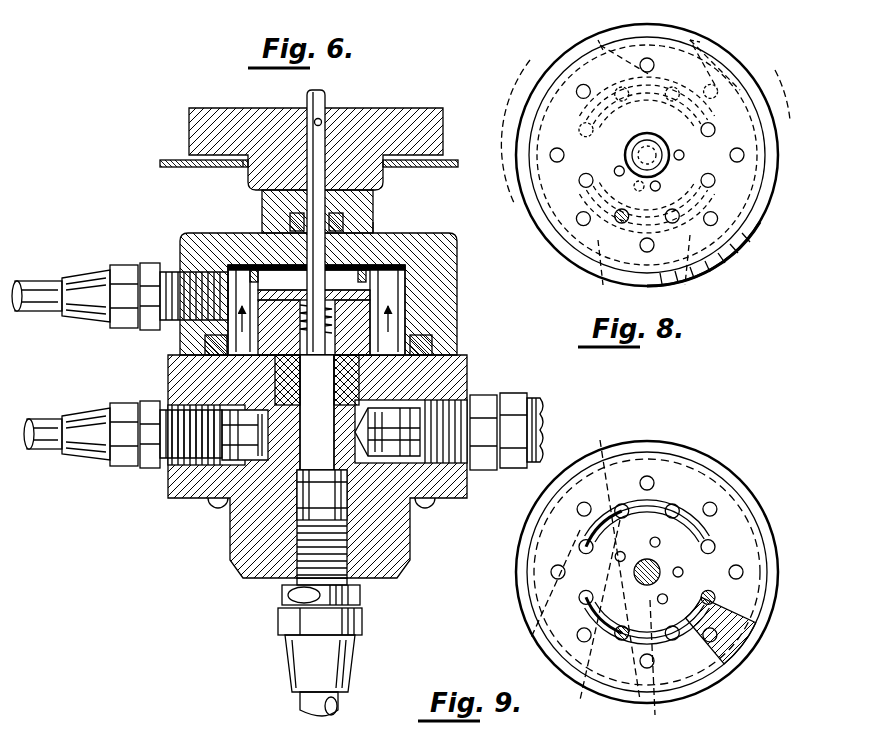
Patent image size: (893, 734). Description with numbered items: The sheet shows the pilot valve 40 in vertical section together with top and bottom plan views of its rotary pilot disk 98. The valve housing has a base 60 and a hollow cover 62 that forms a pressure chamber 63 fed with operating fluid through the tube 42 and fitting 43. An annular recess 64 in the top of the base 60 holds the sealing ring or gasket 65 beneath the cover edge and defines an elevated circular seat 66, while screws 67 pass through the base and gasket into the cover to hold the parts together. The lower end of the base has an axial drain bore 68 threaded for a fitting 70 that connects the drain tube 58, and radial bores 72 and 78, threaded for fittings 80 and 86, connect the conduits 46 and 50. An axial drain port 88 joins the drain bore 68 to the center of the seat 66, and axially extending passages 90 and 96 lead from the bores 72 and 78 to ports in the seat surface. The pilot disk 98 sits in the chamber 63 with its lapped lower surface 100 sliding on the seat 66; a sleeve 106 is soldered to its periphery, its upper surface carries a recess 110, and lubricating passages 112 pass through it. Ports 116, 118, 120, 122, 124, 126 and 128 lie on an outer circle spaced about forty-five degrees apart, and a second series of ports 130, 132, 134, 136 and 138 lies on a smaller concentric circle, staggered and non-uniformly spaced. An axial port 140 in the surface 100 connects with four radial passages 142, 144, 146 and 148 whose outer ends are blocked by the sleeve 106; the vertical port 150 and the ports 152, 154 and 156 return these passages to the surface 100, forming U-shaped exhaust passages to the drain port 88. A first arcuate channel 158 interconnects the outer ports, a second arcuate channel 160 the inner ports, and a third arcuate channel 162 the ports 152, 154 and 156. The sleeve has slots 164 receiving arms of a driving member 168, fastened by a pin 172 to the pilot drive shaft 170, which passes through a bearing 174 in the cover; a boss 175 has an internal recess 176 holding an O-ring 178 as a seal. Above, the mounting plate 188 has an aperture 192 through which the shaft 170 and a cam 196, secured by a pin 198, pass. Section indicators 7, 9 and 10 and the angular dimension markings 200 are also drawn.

In FIG. 6, the pilot valve 40 is at (440, 230).
In FIG. 6, the tube 42 is at (50, 285).
In FIG. 6, the fitting 43 is at (150, 263).
In FIG. 6, the conduit 46 is at (45, 450).
In FIG. 6, the conduit 50 is at (535, 398).
In FIG. 6, the drain tube 58 is at (344, 696).
In FIG. 6, the base 60 is at (235, 540).
In FIG. 6, the cover 62 is at (447, 282).
In FIG. 6, the pressure chamber 63 is at (303, 301).
In FIG. 6, the annular recess 64 is at (367, 347).
In FIG. 6, the sealing ring or gasket 65 is at (448, 356).
In FIG. 6, the valve seat 66 is at (287, 380).
In FIG. 6, the screws 67 is at (216, 506).
In FIG. 6, the axial drain bore 68 is at (300, 490).
In FIG. 6, the fitting 70 is at (356, 602).
In FIG. 6, the radial bore 72 is at (245, 435).
In FIG. 6, the radial bore 78 is at (387, 432).
In FIG. 6, the fitting 80 is at (150, 468).
In FIG. 6, the fitting 86 is at (478, 472).
In FIG. 9, the fitting 86 is at (498, 470).
In FIG. 6, the axial drain port 88 is at (310, 396).
In FIG. 6, the axially extending passage 90 is at (268, 380).
In FIG. 6, the axially extending passage 96 is at (343, 382).
In FIG. 6, the rotary pilot disk 98 is at (325, 319).
In FIG. 8, the rotary pilot disk 98 is at (742, 232).
In FIG. 9, the rotary pilot disk 98 is at (678, 453).
In FIG. 9, the lower surface 100 is at (707, 462).
In FIG. 6, the sleeve 106 is at (364, 304).
In FIG. 8, the sleeve 106 is at (748, 200).
In FIG. 9, the sleeve 106 is at (762, 668).
In FIG. 8, the recess 110 is at (642, 194).
In FIG. 8, the lubricating passages 112 is at (691, 167).
In FIG. 9, the lubricating passages 112 is at (682, 558).
In FIG. 8, the port 116 is at (642, 62).
In FIG. 9, the port 116 is at (649, 668).
In FIG. 8, the port 118 is at (578, 86).
In FIG. 9, the port 118 is at (580, 636).
In FIG. 8, the port 120 is at (550, 157).
In FIG. 9, the port 120 is at (552, 570).
In FIG. 8, the port 122 is at (576, 222).
In FIG. 9, the port 122 is at (580, 506).
In FIG. 8, the port 124 is at (648, 252).
In FIG. 9, the port 124 is at (649, 476).
In FIG. 8, the port 126 is at (716, 226).
In FIG. 9, the port 126 is at (712, 504).
In FIG. 8, the port 128 is at (742, 160).
In FIG. 9, the port 128 is at (692, 570).
In FIG. 8, the port 130 is at (601, 173).
In FIG. 9, the port 130 is at (578, 546).
In FIG. 8, the port 132 is at (613, 202).
In FIG. 9, the port 132 is at (620, 518).
In FIG. 8, the port 134 is at (658, 188).
In FIG. 9, the port 134 is at (671, 518).
In FIG. 8, the port 136 is at (752, 180).
In FIG. 9, the port 136 is at (714, 544).
In FIG. 8, the port 138 is at (715, 152).
In FIG. 9, the port 138 is at (730, 578).
In FIG. 8, the axial port 140 is at (647, 155).
In FIG. 9, the axial port 140 is at (634, 570).
In FIG. 8, the radial passage 142 is at (736, 106).
In FIG. 9, the radial passage 142 is at (768, 645).
In FIG. 8, the radial passage 144 is at (692, 40).
In FIG. 9, the radial passage 144 is at (665, 657).
In FIG. 8, the radial passage 146 is at (600, 42).
In FIG. 9, the radial passage 146 is at (582, 672).
In FIG. 8, the radial passage 148 is at (532, 152).
In FIG. 9, the radial passage 148 is at (556, 622).
In FIG. 8, the vertical port 150 is at (706, 86).
In FIG. 9, the vertical port 150 is at (764, 655).
In FIG. 8, the port 152 is at (670, 87).
In FIG. 9, the port 152 is at (706, 628).
In FIG. 8, the port 154 is at (706, 128).
In FIG. 9, the port 154 is at (602, 680).
In FIG. 8, the port 156 is at (586, 139).
In FIG. 9, the port 156 is at (592, 591).
In FIG. 9, the first arcuate channel 158 is at (620, 500).
In FIG. 9, the second arcuate channel 160 is at (602, 490).
In FIG. 9, the third arcuate channel 162 is at (607, 645).
In FIG. 8, the axially extending slots 164 is at (685, 280).
In FIG. 6, the driving member 168 is at (300, 288).
In FIG. 8, the driving member 168 is at (600, 260).
In FIG. 6, the pilot drive shaft 170 is at (326, 106).
In FIG. 6, the pin 172 is at (349, 275).
In FIG. 6, the bearing 174 is at (323, 240).
In FIG. 6, the boss 175 is at (374, 225).
In FIG. 6, the internal recess 176 is at (334, 214).
In FIG. 6, the O-ring 178 is at (270, 220).
In FIG. 6, the mounting plate 188 is at (168, 168).
In FIG. 6, the aperture 192 is at (246, 170).
In FIG. 6, the cam 196 is at (190, 132).
In FIG. 6, the pin 198 is at (314, 118).
In FIG. 6, the section line 7 is at (301, 337).
In FIG. 6, the section line 9 is at (312, 320).
In FIG. 8, the section line 10 is at (636, 163).
In FIG. 9, the dimension lines 200 is at (641, 564).